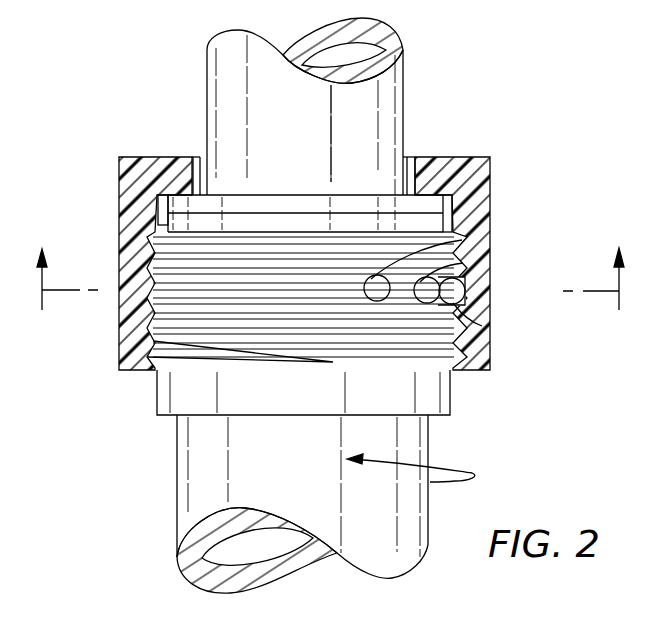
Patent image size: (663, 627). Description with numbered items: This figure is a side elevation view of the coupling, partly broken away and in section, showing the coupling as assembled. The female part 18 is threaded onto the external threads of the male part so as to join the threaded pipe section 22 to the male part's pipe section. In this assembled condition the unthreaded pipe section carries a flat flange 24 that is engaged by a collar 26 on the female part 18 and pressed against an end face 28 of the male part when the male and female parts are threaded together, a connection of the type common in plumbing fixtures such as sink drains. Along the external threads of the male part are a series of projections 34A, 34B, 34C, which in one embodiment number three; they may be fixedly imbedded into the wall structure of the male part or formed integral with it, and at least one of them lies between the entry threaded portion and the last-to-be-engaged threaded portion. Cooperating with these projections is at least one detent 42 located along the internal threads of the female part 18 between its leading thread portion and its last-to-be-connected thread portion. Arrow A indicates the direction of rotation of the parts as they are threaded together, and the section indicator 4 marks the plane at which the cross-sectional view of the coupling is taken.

The female part 18 is at (118, 199).
The threaded pipe section 22 is at (206, 106).
The flat flange 24 is at (360, 207).
The collar 26 is at (450, 156).
The end face 28 is at (282, 210).
The projection 34A is at (466, 245).
The projection 34B is at (464, 263).
The projection 34C is at (482, 326).
The detent 42 is at (466, 296).
The direction of rotation A is at (462, 464).
The section line 4- 4 is at (329, 274).